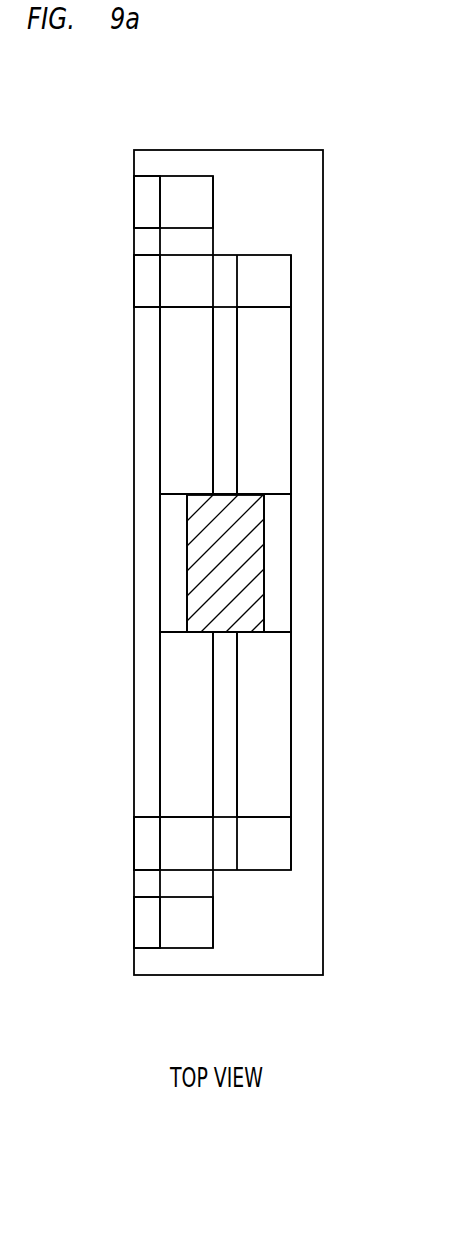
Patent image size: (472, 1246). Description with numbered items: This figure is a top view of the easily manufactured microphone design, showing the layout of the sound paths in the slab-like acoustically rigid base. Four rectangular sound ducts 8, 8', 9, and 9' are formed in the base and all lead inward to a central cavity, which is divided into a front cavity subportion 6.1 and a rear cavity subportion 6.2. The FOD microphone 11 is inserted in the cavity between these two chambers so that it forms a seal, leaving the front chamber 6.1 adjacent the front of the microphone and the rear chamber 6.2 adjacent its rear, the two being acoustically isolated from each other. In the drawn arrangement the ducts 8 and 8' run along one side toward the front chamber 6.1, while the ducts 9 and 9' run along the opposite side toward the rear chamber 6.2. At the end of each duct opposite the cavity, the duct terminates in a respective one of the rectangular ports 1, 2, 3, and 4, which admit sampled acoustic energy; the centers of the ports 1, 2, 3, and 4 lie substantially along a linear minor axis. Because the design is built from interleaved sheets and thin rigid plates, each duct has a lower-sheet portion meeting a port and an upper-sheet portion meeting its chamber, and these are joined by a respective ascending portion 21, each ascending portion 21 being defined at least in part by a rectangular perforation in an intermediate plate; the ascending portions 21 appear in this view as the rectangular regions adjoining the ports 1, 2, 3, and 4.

The port 1 is at (145, 202).
The port 2 is at (145, 287).
The port 3 is at (143, 848).
The port 4 is at (143, 935).
The sound duct 8 is at (157, 400).
The sound duct 9 is at (292, 400).
The sound duct 8' is at (156, 724).
The sound duct 9' is at (294, 724).
The front cavity subportion 6.1 is at (167, 573).
The rear cavity subportion 6.2 is at (273, 545).
The FOD microphone 11 is at (257, 615).
The ascending portion 21 is at (203, 203).